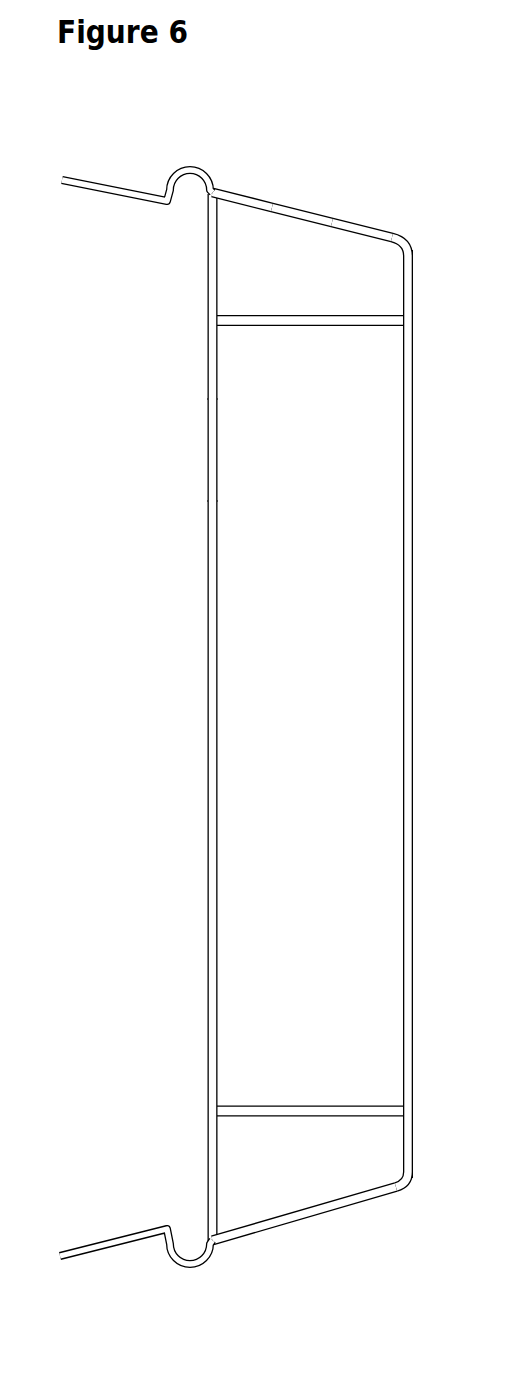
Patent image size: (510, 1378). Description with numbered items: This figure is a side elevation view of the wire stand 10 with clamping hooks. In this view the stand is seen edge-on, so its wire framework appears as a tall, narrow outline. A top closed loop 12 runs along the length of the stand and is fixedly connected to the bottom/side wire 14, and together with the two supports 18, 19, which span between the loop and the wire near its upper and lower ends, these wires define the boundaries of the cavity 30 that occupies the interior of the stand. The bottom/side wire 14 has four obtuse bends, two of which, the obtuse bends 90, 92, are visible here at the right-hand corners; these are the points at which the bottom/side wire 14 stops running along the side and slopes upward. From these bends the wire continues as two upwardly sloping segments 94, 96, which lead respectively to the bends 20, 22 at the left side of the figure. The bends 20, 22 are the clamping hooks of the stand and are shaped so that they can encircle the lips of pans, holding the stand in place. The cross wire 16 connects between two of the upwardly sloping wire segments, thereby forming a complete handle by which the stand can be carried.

The wire stand 10 is at (313, 214).
The top closed loop 12 is at (207, 542).
The bottom/side wire 14 is at (375, 228).
The cross wire 16 is at (508, 722).
The support 18 is at (372, 315).
The support 19 is at (382, 1105).
The bend 20 is at (188, 166).
The bend 22 is at (193, 1263).
The cavity 30 is at (235, 448).
The obtuse bend 90 is at (407, 247).
The obtuse bend 92 is at (407, 1192).
The upwardly sloping segment 94 is at (265, 199).
The upwardly sloping segment 96 is at (342, 1212).